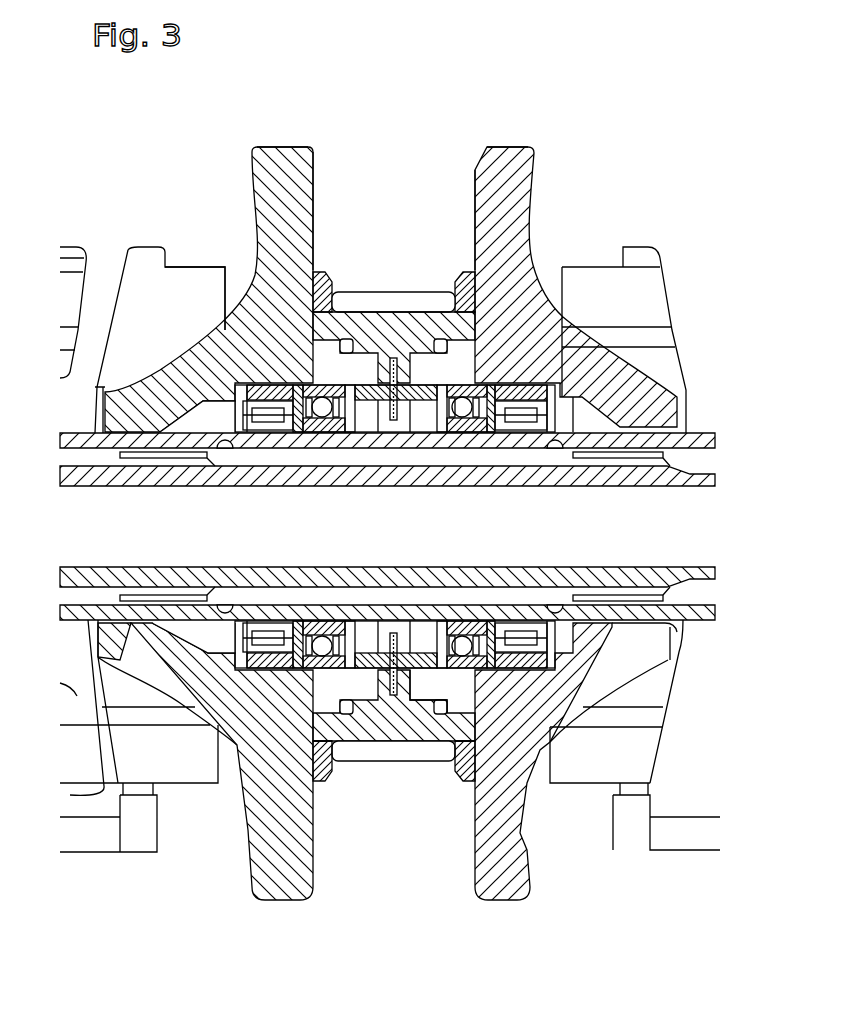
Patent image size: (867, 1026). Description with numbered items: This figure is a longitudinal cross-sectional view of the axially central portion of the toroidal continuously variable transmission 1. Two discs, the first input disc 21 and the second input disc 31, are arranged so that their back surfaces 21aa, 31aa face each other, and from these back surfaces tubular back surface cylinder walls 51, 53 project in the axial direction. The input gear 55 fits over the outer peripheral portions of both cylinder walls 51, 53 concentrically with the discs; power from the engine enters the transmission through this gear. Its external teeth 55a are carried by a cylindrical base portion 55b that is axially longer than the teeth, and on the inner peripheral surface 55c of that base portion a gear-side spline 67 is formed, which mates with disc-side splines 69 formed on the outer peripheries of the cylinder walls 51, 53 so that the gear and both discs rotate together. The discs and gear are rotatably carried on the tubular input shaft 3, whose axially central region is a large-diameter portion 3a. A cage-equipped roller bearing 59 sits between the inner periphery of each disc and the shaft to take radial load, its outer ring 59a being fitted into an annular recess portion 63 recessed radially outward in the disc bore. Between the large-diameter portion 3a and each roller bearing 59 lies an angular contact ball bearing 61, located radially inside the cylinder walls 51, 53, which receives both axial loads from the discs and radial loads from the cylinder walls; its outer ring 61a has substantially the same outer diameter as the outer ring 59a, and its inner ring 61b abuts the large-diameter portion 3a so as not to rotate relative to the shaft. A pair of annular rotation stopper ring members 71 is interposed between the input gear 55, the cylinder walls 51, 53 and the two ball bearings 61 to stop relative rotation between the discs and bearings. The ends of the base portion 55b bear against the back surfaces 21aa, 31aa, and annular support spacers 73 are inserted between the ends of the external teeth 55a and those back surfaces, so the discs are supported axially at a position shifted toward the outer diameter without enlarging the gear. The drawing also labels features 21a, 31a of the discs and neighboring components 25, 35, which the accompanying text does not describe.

The continuously variable transmission 1 is at (641, 118).
The input shaft 3 is at (696, 443).
The large-diameter portion 3a is at (412, 628).
The first input disc 21 is at (252, 165).
The end face of first rotor 21a is at (289, 147).
The back surface of the first input disc 21aa is at (329, 150).
The first housing 25 is at (167, 247).
The second input disc 31 is at (534, 153).
The end face of second rotor 31a is at (513, 148).
The back surface of the second input disc 31aa is at (453, 150).
The second housing 35 is at (607, 293).
The back surface cylinder wall 51 is at (386, 320).
The back surface cylinder wall 53 is at (449, 330).
The input gear 55 is at (412, 292).
The external teeth 55a is at (440, 765).
The cylindrical base portion 55b is at (325, 770).
The inner peripheral surface 55c is at (450, 707).
The cage-equipped roller bearing 59 is at (200, 397).
The outer ring of the cage-equipped roller bearing 59a is at (215, 645).
The angular contact ball bearing 61 is at (237, 383).
The outer ring of the angular contact ball bearing 61a is at (277, 660).
The inner ring of the angular contact ball bearing 61b is at (325, 640).
The annular recess portion 63 is at (183, 292).
The gear-side spline 67 is at (413, 752).
The disc-side spline 69 is at (360, 738).
The rotation stopper ring member 71 is at (393, 358).
The support spacer 73 is at (325, 271).